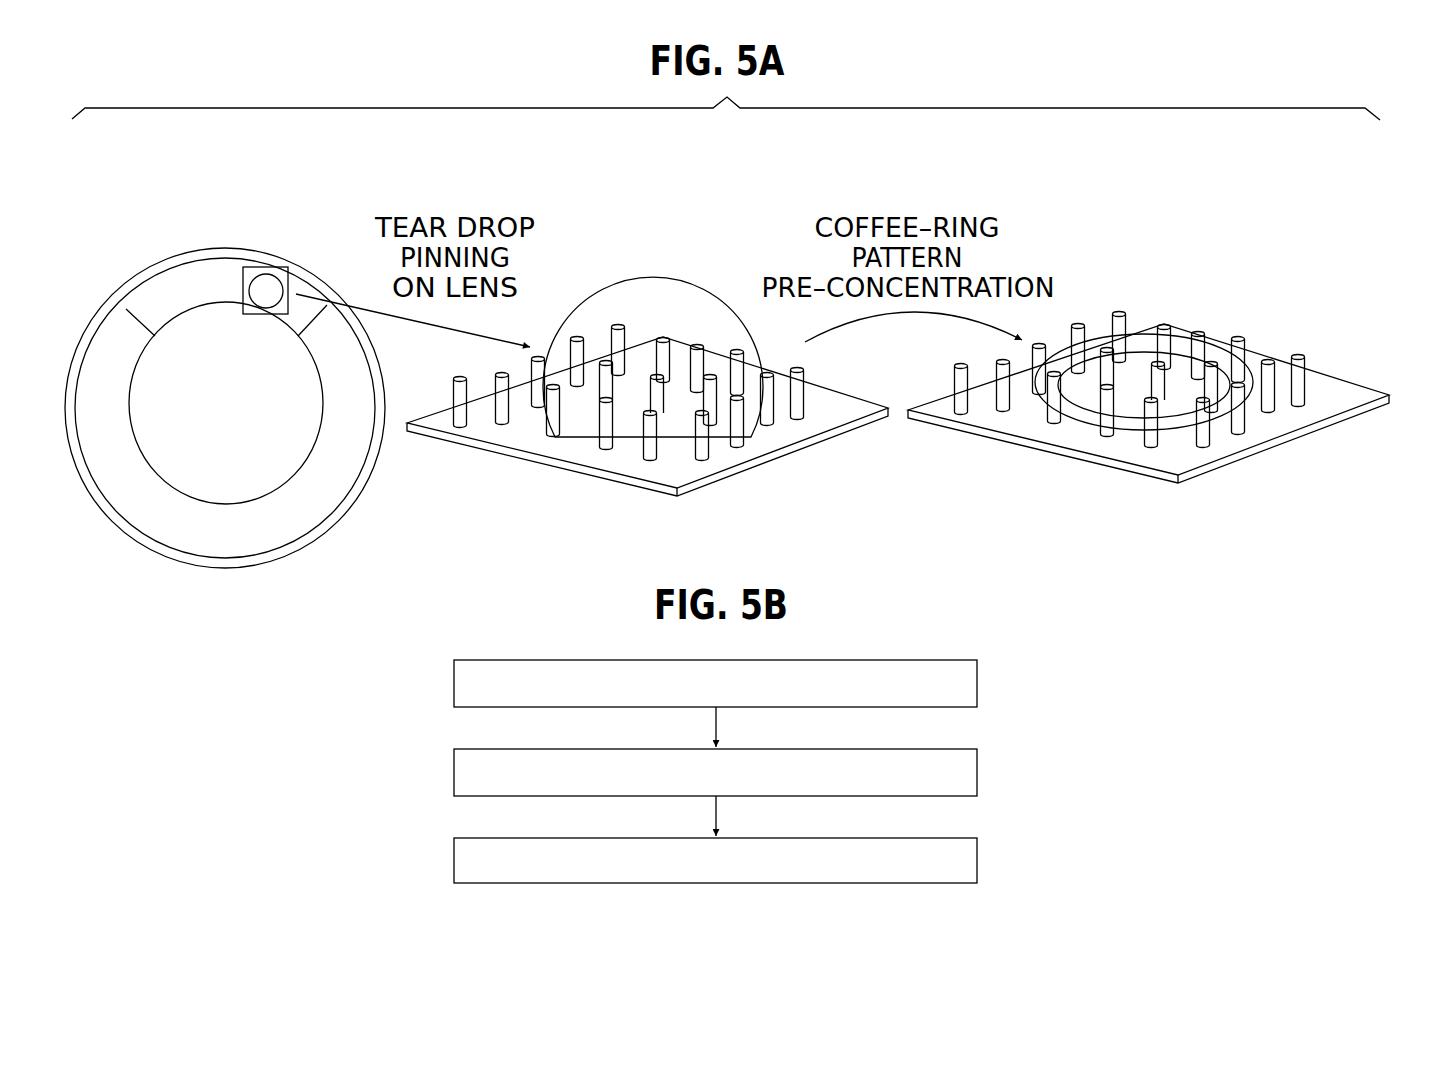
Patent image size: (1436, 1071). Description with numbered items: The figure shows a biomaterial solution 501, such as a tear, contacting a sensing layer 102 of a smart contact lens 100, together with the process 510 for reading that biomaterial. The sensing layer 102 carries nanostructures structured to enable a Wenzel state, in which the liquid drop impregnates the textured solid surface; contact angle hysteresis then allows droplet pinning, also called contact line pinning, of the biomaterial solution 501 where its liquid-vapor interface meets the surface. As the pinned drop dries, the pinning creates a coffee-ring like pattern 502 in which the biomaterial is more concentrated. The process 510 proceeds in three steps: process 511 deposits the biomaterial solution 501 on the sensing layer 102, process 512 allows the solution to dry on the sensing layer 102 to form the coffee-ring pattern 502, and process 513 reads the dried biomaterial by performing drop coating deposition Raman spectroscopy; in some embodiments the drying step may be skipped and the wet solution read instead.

In FIG. 5A, the smart contact lens 100 is at (275, 549).
In FIG. 5A, the sensing layer 102 is at (182, 289).
In FIG. 5A, the biomaterial solution 501 is at (627, 290).
In FIG. 5A, the coffee-ring pattern 502 is at (1127, 290).
In FIG. 5B, the process 510 is at (910, 605).
In FIG. 5B, the depositing process 511 is at (938, 660).
In FIG. 5B, the drying process 512 is at (938, 749).
In FIG. 5B, the reading process 513 is at (938, 838).